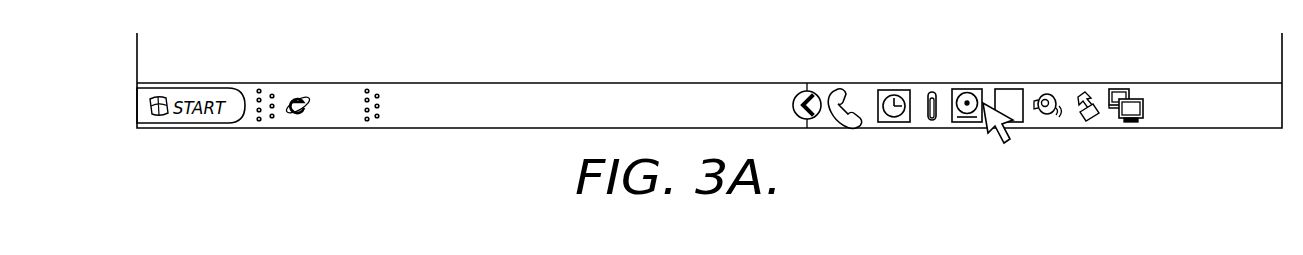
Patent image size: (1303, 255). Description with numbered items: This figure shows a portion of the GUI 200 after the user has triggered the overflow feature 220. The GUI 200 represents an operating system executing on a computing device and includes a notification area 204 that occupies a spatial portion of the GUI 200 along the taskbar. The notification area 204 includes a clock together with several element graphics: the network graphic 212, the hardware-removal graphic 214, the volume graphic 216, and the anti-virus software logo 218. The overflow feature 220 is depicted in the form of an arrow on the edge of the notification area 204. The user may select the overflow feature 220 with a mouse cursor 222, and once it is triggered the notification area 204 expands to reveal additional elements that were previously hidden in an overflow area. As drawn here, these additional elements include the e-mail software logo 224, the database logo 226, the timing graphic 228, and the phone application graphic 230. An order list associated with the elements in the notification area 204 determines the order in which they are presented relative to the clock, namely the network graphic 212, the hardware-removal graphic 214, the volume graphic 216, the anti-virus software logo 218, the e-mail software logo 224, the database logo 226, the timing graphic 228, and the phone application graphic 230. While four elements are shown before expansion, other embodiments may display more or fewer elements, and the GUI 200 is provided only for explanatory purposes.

The GUI 200 is at (136, 46).
The notification area 204 is at (1162, 108).
The network graphic 212 is at (1130, 122).
The hardware-removal graphic 214 is at (1085, 92).
The volume graphic 216 is at (1052, 120).
The anti-virus software logo 218 is at (1012, 89).
The overflow feature 220 is at (797, 96).
The mouse cursor 222 is at (1007, 143).
The e-mail software logo 224 is at (967, 122).
The database logo 226 is at (932, 92).
The timing graphic 228 is at (894, 122).
The phone application graphic 230 is at (843, 90).